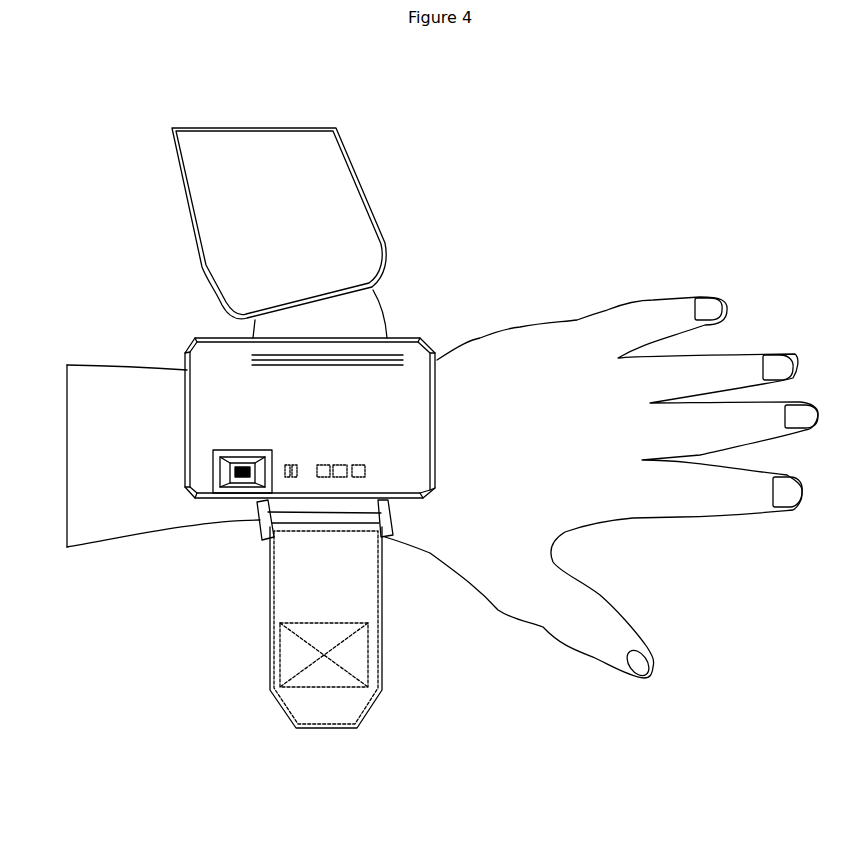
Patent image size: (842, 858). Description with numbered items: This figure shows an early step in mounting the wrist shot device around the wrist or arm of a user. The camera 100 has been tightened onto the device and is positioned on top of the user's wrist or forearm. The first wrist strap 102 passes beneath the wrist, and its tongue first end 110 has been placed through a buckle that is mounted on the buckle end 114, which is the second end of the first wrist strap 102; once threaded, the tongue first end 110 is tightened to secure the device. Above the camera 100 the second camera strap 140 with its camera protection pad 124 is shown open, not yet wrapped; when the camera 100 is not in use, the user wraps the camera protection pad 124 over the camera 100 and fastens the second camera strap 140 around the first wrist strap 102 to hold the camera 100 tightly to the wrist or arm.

The camera 100 is at (440, 334).
The first wrist strap 102 is at (222, 642).
The tongue first end 110 is at (290, 737).
The buckle end 114 is at (260, 537).
The camera protection pad 124 is at (388, 218).
The second camera strap 140 is at (482, 182).